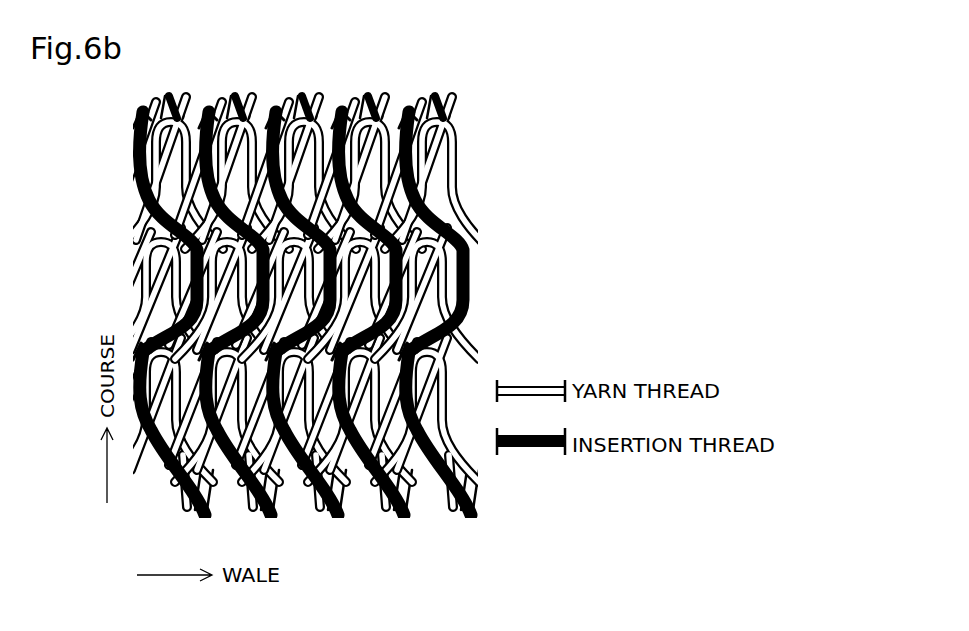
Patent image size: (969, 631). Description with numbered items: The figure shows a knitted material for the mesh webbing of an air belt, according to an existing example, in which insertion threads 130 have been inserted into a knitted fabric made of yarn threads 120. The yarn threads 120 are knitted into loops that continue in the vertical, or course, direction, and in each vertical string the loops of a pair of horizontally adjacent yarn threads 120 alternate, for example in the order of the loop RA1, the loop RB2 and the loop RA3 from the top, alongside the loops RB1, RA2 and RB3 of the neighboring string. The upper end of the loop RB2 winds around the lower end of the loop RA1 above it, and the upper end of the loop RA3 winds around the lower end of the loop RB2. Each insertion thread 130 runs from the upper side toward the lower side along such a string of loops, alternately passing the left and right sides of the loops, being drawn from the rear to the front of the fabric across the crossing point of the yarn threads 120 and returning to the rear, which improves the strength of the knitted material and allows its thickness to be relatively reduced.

The yarn thread 120 is at (415, 112).
The insertion thread 130 is at (460, 283).
The loop RB1 is at (298, 177).
The loop RA1 is at (362, 183).
The loop RA2 is at (420, 262).
The loop RB2 is at (365, 302).
The loop RA3 is at (372, 417).
The loop RB3 is at (307, 422).